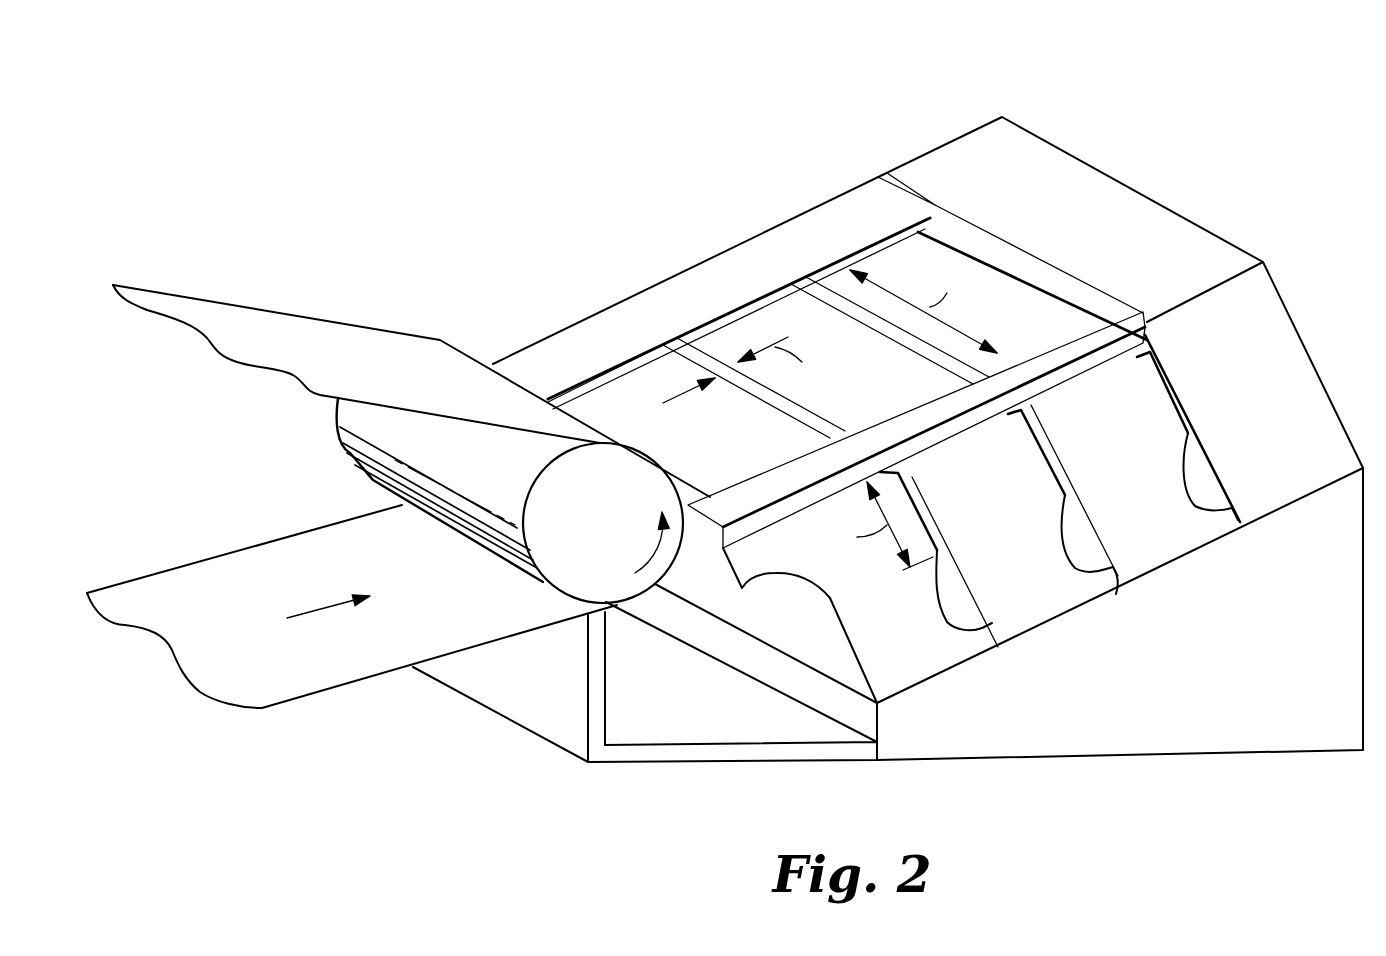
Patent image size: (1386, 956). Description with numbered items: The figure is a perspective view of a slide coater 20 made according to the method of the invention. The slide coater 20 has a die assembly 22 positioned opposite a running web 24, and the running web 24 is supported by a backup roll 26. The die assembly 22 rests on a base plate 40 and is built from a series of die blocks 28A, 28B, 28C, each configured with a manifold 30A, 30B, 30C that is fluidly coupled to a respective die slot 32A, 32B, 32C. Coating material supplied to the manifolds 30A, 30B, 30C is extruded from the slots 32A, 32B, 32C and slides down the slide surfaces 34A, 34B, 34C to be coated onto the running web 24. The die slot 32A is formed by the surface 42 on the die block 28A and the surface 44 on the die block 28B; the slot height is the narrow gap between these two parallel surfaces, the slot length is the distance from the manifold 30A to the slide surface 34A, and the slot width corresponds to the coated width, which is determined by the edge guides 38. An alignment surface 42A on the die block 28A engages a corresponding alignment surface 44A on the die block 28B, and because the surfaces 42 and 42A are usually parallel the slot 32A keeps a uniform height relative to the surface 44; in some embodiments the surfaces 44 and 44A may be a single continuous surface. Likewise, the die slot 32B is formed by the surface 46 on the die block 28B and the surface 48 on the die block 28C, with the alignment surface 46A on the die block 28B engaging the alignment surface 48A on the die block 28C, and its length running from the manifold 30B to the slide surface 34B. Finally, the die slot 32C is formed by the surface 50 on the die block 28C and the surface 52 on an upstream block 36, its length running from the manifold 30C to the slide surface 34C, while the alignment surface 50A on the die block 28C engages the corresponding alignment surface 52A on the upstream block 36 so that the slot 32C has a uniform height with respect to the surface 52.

The slide coater 20 is at (1182, 80).
The die assembly 22 is at (1192, 210).
The running web 24 is at (385, 652).
The backup roll 26 is at (577, 575).
The die block 28A is at (886, 712).
The die block 28B is at (1033, 613).
The die block 28C is at (1182, 560).
The manifold 30A is at (947, 557).
The manifold 30B is at (1106, 531).
The manifold 30C is at (1232, 467).
The die slot 32A is at (690, 347).
The die slot 32B is at (812, 293).
The die slot 32C is at (930, 228).
The slide surface 34A is at (600, 400).
The slide surface 34B is at (722, 340).
The slide surface 34C is at (888, 257).
The upstream block 36 is at (992, 125).
The edge guides 38 is at (720, 263).
The base plate 40 is at (993, 743).
The surface 42 is at (915, 485).
The alignment surface 42A is at (990, 627).
The surface 44 is at (937, 523).
The alignment surface 44A is at (1003, 633).
The surface 46 is at (1053, 480).
The alignment surface 46A is at (1112, 597).
The surface 48 is at (1063, 468).
The alignment surface 48A is at (1088, 540).
The surface 50 is at (1178, 425).
The alignment surface 50A is at (1242, 515).
The surface 52 is at (1182, 392).
The alignment surface 52A is at (1240, 507).